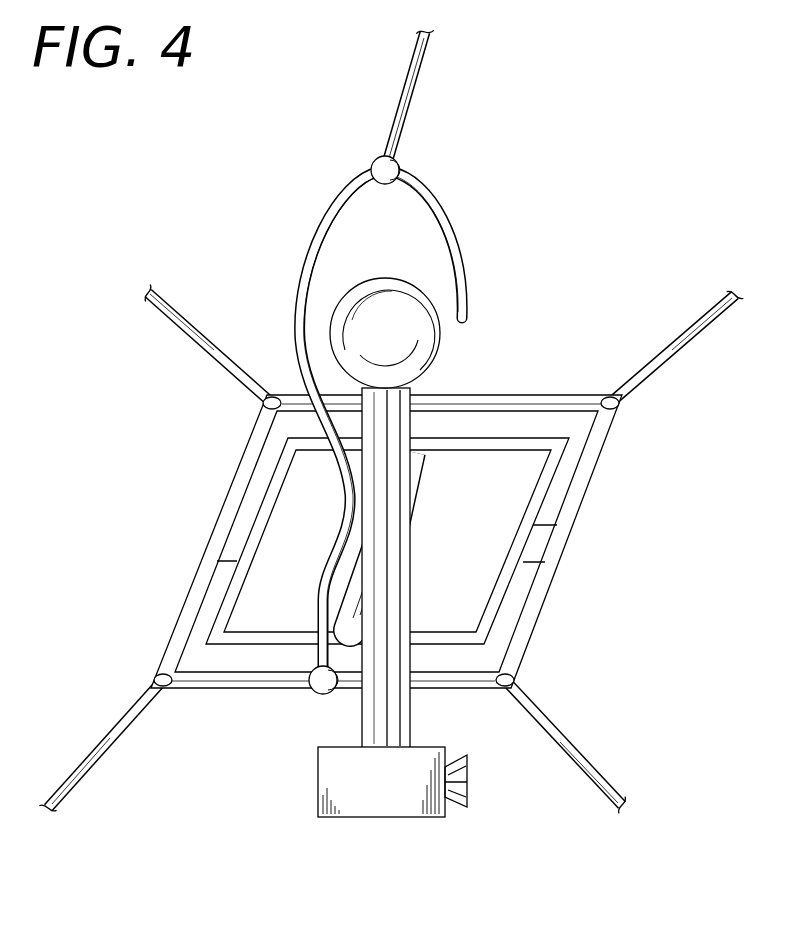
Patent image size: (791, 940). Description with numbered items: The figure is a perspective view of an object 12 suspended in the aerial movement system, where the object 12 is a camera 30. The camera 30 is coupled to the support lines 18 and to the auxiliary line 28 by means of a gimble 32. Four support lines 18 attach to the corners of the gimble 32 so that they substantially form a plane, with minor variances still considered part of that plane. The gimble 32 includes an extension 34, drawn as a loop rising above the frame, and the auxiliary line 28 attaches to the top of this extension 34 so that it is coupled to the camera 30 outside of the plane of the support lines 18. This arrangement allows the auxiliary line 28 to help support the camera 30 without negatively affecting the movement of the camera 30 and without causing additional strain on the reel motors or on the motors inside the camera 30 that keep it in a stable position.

The object 12 is at (391, 471).
The support lines 18 is at (225, 360).
The auxiliary line 28 is at (402, 101).
The camera 30 is at (365, 804).
The gimble 32 is at (220, 506).
The extension 34 is at (312, 233).